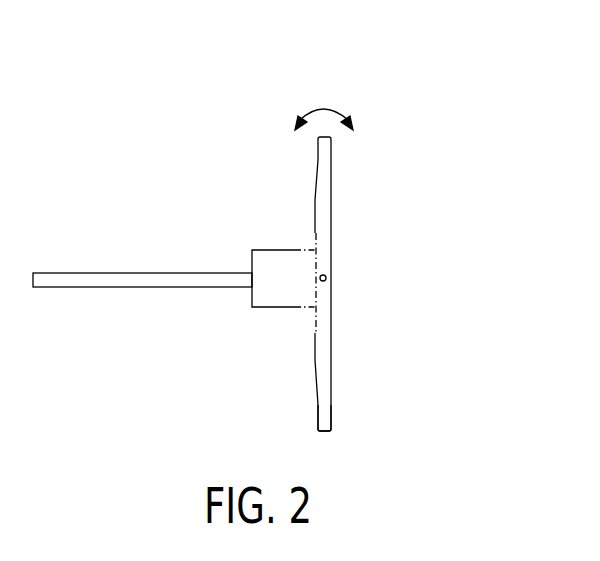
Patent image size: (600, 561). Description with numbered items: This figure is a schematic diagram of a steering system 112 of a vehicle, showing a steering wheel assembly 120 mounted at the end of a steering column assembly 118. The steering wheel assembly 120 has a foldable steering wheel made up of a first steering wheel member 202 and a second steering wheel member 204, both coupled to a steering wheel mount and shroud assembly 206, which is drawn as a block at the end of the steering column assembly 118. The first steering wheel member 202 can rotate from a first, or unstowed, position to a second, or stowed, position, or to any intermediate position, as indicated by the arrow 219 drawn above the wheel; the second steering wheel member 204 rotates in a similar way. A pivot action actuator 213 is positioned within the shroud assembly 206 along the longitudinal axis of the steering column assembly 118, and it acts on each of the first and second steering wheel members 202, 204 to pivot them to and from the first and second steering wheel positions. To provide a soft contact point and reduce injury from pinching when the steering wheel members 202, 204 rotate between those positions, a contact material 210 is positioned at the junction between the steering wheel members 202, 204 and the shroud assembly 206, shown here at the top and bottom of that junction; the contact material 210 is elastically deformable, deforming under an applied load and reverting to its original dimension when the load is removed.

The tool assembly 112 is at (142, 95).
The steering column assembly 118 is at (143, 281).
The steering wheel assembly 120 is at (408, 130).
The first steering wheel member 202 is at (323, 170).
The second steering wheel member 204 is at (323, 393).
The steering wheel mount and shroud assembly 206 is at (275, 257).
The contact material 210 is at (316, 233).
The pivot action actuator 213 is at (327, 277).
The arrow 219 is at (323, 105).